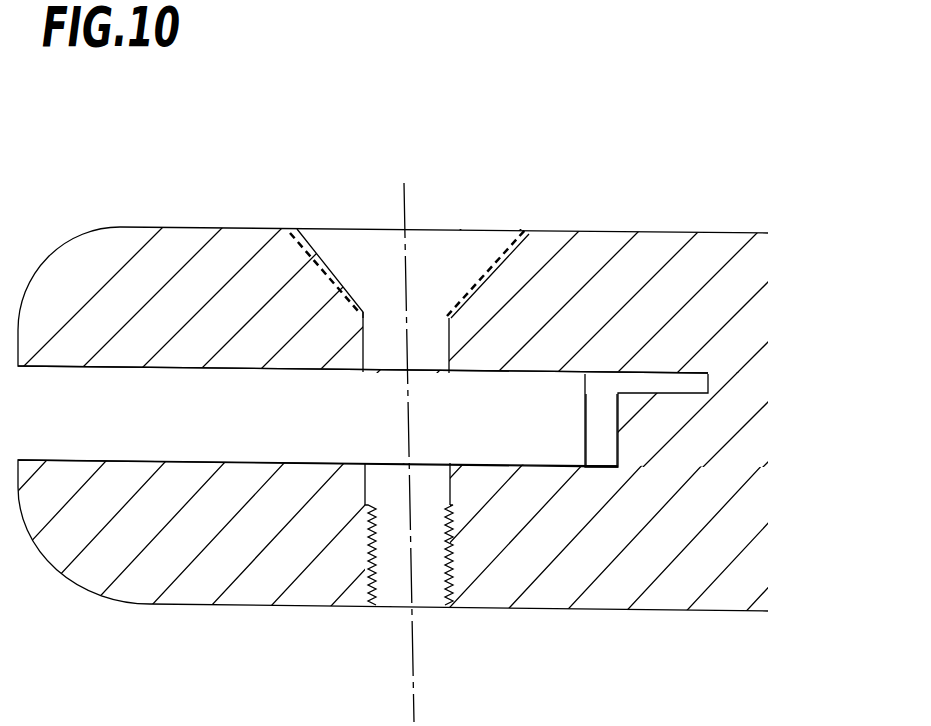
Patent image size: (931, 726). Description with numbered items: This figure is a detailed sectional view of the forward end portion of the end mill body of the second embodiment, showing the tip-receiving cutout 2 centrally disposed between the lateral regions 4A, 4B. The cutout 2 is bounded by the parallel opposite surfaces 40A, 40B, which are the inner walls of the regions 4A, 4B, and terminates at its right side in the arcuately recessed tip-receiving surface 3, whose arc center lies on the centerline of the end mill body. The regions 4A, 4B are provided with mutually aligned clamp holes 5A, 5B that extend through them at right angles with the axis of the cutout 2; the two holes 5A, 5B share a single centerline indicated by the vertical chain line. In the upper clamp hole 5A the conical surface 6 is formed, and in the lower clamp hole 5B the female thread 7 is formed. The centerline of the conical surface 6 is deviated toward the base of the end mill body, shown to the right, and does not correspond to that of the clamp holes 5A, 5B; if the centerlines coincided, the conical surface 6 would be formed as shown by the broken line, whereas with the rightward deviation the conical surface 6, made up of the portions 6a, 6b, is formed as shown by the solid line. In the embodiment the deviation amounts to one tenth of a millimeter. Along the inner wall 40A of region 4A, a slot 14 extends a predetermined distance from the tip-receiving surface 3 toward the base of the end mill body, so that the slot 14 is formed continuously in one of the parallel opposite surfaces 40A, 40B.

The tip-receiving cutout 2 is at (247, 433).
The tip-receiving surface 3 is at (626, 437).
The lateral region 4A is at (153, 267).
The lateral region 4B is at (188, 582).
The clamp hole 5A is at (373, 354).
The clamp hole 5B is at (436, 482).
The conical surface 6 is at (377, 150).
The conical surface portion 6a is at (322, 256).
The conical surface portion 6b is at (507, 256).
The female thread 7 is at (452, 577).
The slot 14 is at (655, 385).
The inner wall 40A is at (180, 367).
The inner wall 40B is at (162, 458).